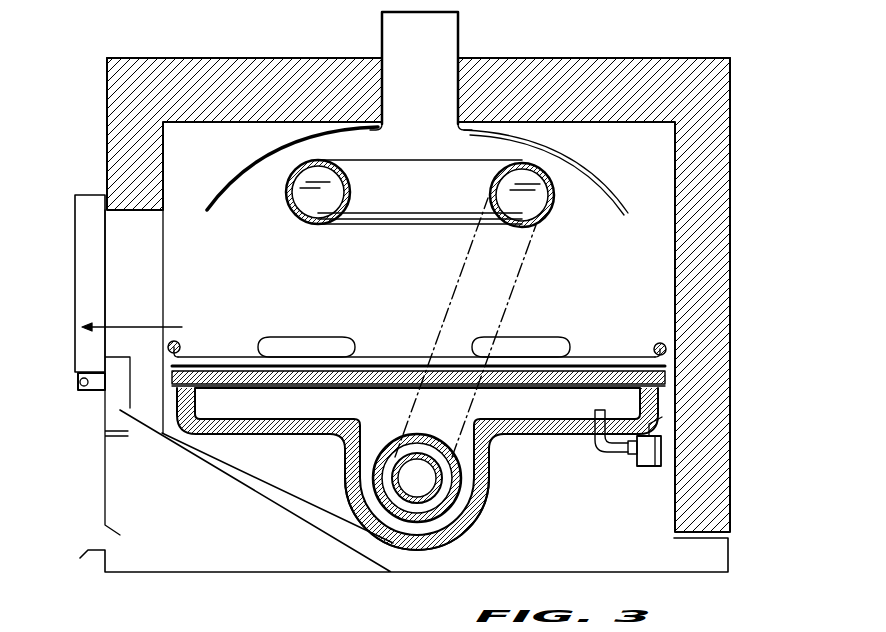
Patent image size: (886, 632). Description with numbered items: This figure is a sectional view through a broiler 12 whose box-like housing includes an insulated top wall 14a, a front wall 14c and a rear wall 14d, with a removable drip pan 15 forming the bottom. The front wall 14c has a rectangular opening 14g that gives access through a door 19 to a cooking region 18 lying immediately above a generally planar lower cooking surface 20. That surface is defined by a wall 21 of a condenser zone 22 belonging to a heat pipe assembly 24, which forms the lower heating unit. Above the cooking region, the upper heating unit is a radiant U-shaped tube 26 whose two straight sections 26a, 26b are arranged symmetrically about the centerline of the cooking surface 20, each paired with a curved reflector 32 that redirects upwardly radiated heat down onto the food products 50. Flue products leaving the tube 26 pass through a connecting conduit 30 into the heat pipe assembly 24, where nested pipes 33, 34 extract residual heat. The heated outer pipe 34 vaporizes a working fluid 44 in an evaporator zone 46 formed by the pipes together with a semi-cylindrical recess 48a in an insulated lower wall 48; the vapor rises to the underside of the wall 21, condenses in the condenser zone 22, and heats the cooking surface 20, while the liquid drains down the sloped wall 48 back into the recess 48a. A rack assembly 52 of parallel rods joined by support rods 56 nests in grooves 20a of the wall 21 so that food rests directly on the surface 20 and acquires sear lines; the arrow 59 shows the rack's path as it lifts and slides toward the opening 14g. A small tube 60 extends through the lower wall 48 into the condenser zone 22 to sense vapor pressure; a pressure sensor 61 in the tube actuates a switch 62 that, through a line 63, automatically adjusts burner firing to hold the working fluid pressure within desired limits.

The broiler 12 is at (752, 216).
The top wall 14a is at (517, 62).
The front wall 14c is at (107, 155).
The rear wall 14d is at (730, 347).
The opening 14g is at (144, 275).
The drip pan 15 is at (250, 572).
The cooking region 18 is at (441, 330).
The door 19 is at (75, 280).
The lower cooking surface 20 is at (578, 358).
The grooves 20a is at (375, 357).
The wall 21 is at (513, 388).
The condenser zone 22 is at (265, 400).
The heat pipe assembly 24 is at (510, 459).
The U-shaped tube 26 is at (399, 158).
The straight section 26a is at (297, 213).
The straight section 26b is at (553, 211).
The connecting conduit 30 is at (510, 300).
The curved reflectors 32 is at (217, 193).
The inner pipe 33 is at (428, 458).
The outer pipe 34 is at (399, 440).
The working fluid 44 is at (391, 544).
The evaporator zone 46 is at (350, 461).
The insulated lower wall 48 is at (523, 440).
The semi-cylindrical recess 48a is at (481, 514).
The food products 50 is at (297, 337).
The rack assembly 52 is at (228, 357).
The support rods 56 is at (210, 343).
The arrow 59 is at (157, 308).
The tube 60 is at (603, 412).
The pressure sensor 61 is at (624, 458).
The switch 62 is at (652, 468).
The line 63 is at (650, 431).